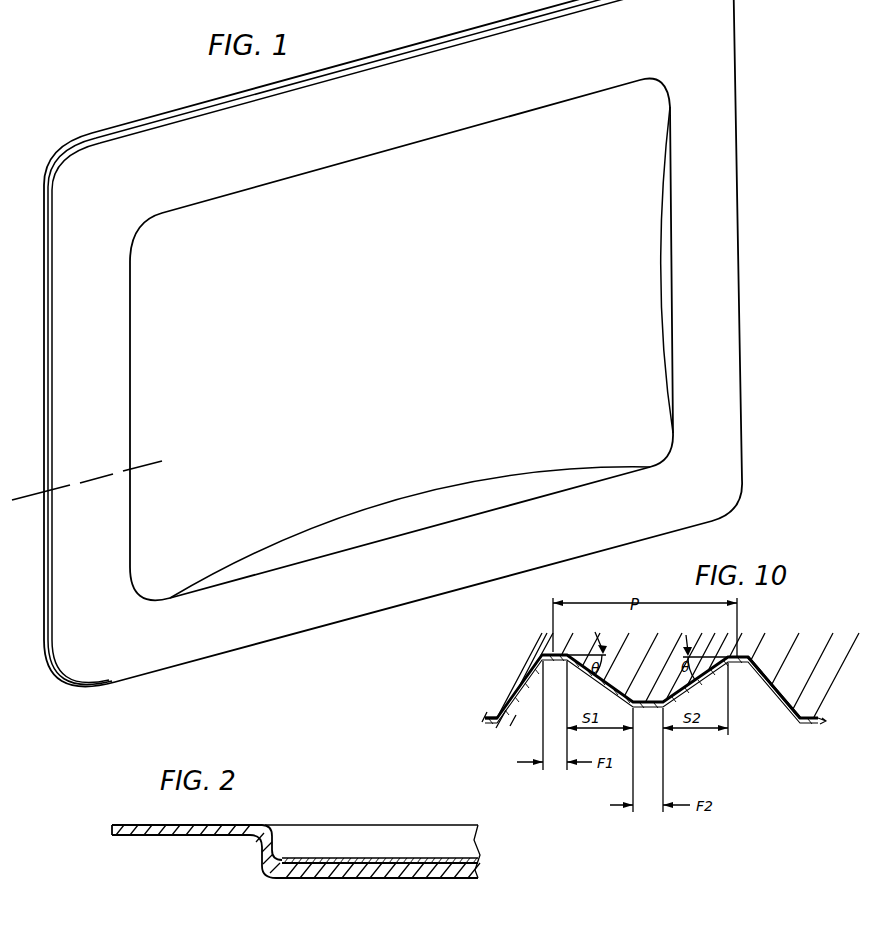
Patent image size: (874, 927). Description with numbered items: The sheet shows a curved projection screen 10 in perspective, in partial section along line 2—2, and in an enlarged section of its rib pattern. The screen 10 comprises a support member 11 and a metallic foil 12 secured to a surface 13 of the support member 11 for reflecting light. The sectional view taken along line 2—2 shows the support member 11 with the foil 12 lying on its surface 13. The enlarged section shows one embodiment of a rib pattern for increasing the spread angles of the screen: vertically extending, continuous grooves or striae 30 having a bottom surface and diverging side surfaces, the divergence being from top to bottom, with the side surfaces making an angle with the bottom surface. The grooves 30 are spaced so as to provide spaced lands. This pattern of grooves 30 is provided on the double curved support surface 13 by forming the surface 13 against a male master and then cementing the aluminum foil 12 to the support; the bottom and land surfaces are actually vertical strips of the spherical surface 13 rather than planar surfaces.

In FIG. 1, the screen 10 is at (726, 137).
In FIG. 2, the screen 10 is at (195, 847).
In FIG. 1, the support member 11 is at (376, 597).
In FIG. 2, the support member 11 is at (268, 826).
In FIG. 10, the support member 11 is at (755, 650).
In FIG. 1, the metallic foil 12 is at (409, 324).
In FIG. 2, the metallic foil 12 is at (380, 863).
In FIG. 10, the metallic foil 12 is at (789, 706).
In FIG. 2, the surface of the support member 13 is at (297, 866).
In FIG. 10, the surface of the support member 13 is at (492, 716).
In FIG. 10, the grooves or striae 30 is at (527, 700).
In FIG. 1, the section line 2— 2 is at (159, 468).